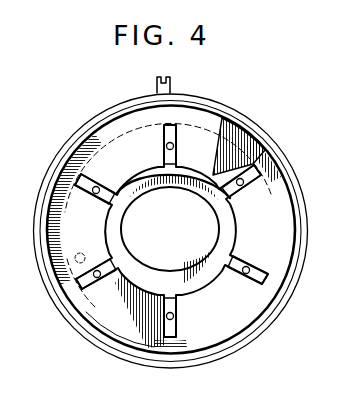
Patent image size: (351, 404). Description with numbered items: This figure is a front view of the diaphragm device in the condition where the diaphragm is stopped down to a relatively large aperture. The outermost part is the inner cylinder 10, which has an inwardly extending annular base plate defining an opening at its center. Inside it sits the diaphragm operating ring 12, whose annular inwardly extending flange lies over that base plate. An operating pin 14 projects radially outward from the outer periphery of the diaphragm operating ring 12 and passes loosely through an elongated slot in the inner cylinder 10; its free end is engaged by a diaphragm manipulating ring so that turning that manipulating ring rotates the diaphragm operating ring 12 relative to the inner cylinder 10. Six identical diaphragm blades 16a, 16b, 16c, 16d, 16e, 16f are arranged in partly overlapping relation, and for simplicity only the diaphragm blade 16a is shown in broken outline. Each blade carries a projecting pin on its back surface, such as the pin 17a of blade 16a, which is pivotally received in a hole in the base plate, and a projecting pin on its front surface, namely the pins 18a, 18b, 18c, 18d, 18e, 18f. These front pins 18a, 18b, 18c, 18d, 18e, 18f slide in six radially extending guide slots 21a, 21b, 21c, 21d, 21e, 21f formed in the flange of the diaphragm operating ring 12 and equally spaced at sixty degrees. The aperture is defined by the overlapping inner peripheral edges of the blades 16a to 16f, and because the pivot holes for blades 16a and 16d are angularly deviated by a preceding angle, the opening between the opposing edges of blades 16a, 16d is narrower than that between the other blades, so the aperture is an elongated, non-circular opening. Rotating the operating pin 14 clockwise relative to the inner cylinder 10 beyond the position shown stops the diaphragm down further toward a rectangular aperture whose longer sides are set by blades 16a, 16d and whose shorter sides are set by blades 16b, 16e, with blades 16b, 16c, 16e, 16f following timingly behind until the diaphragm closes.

The inner cylinder 10 is at (268, 141).
The diaphragm operating ring 12 is at (250, 127).
The operating pin 14 is at (171, 83).
The diaphragm blade 16a is at (223, 116).
The diaphragm blade 16b is at (234, 236).
The diaphragm blade 16c is at (210, 283).
The diaphragm blade 16d is at (160, 274).
The diaphragm blade 16e is at (124, 243).
The diaphragm blade 16f is at (138, 203).
The projecting pin 17a is at (79, 254).
The projecting pin 18a is at (242, 187).
The projecting pin 18b is at (246, 268).
The projecting pin 18c is at (177, 313).
The projecting pin 18d is at (100, 279).
The projecting pin 18e is at (94, 187).
The projecting pin 18f is at (170, 146).
The radially extending slot 21a is at (259, 161).
The radially extending slot 21b is at (250, 278).
The radially extending slot 21c is at (167, 327).
The radially extending slot 21d is at (84, 279).
The radially extending slot 21e is at (73, 173).
The radially extending slot 21f is at (159, 128).